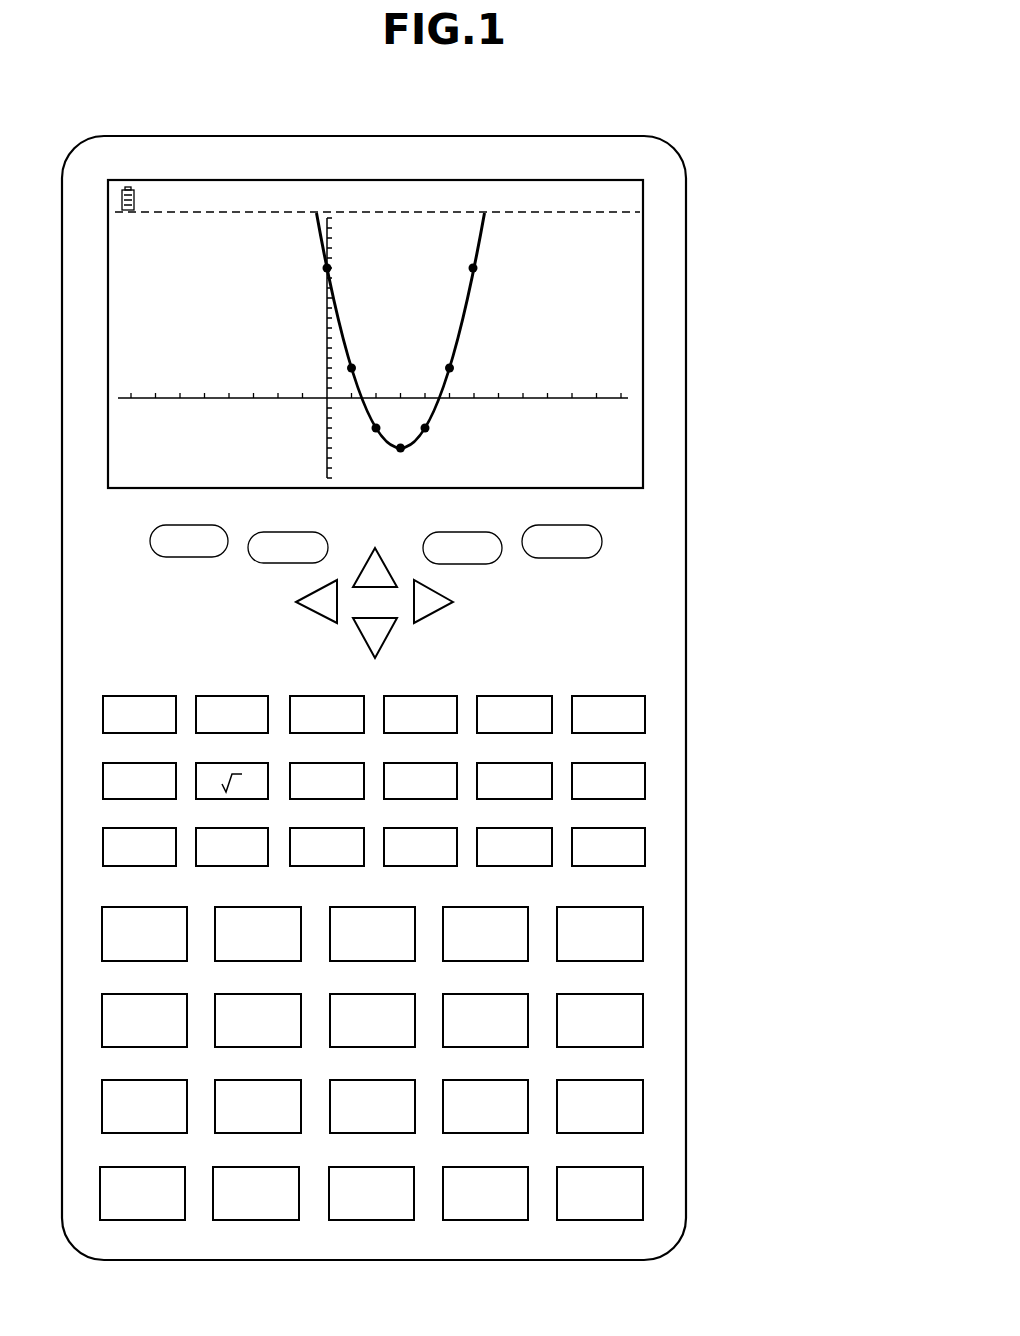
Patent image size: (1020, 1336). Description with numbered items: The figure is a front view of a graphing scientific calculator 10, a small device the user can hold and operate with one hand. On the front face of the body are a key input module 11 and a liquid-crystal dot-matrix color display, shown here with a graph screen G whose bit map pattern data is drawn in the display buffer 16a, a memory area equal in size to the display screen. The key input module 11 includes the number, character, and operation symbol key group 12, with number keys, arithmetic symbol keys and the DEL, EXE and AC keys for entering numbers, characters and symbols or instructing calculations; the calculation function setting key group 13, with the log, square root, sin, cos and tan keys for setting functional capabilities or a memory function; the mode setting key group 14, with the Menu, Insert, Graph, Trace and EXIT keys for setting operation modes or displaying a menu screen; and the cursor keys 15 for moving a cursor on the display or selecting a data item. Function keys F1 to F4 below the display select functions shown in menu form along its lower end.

The graphing scientific calculator 10 is at (531, 136).
The key input module 11 is at (465, 862).
The number, character, and operation symbol key group 12 is at (438, 1062).
The calculation function setting key group 13 is at (722, 757).
The mode setting key group 14 is at (722, 684).
The cursor keys 15 is at (374, 597).
The display buffer 16a is at (630, 292).